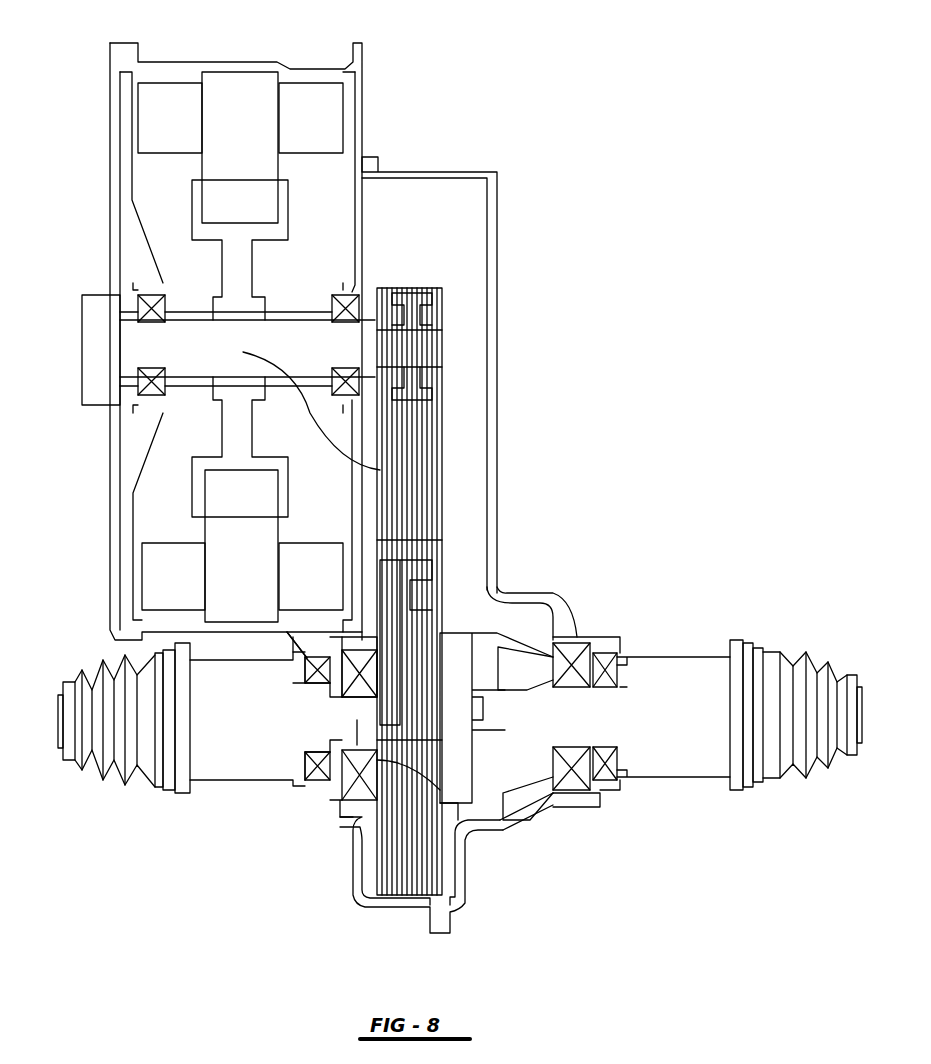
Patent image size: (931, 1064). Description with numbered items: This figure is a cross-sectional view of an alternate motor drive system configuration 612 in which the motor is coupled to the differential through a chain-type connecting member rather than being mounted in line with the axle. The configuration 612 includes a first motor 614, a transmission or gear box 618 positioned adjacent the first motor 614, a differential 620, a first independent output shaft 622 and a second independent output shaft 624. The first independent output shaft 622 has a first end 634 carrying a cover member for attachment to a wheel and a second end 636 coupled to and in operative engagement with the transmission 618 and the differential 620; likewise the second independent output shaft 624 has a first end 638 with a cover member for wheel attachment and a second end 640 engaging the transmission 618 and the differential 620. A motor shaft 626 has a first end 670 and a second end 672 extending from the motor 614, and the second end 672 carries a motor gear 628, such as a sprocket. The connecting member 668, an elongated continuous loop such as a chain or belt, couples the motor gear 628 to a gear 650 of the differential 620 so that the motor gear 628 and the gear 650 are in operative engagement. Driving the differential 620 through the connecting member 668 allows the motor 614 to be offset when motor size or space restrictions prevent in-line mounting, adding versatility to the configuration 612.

The motor drive system configuration 612 is at (620, 124).
The first motor 614 is at (185, 62).
The transmission or gear box 618 is at (553, 590).
The differential 620 is at (460, 763).
The first independent output shaft 622 is at (310, 723).
The second independent output shaft 624 is at (610, 718).
The motor shaft 626 is at (380, 470).
The motor gear 628 is at (437, 350).
The first end of first independent output shaft 634 is at (228, 722).
The second end of first independent output shaft 636 is at (357, 745).
The first end of second independent output shaft 638 is at (690, 740).
The second end of second independent output shaft 640 is at (515, 723).
The gear of the differential 650 is at (398, 645).
The connecting member 668 is at (418, 515).
The first end of motor shaft 670 is at (190, 348).
The second end of motor shaft 672 is at (350, 347).